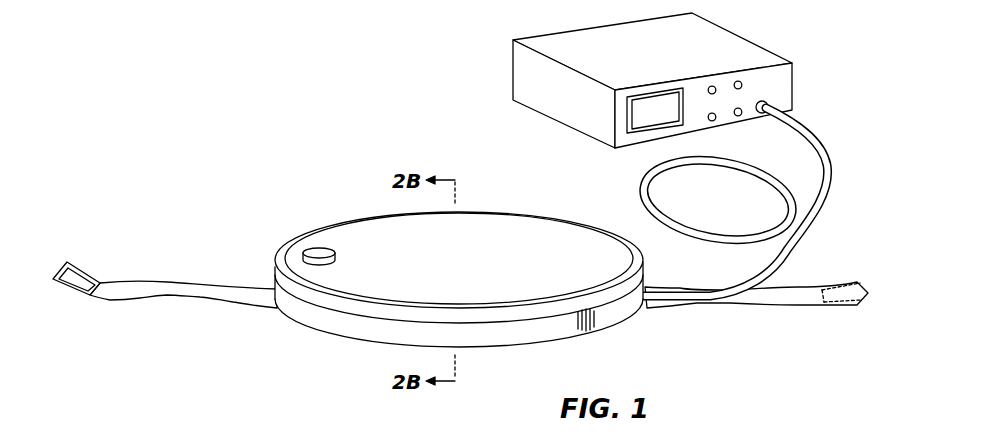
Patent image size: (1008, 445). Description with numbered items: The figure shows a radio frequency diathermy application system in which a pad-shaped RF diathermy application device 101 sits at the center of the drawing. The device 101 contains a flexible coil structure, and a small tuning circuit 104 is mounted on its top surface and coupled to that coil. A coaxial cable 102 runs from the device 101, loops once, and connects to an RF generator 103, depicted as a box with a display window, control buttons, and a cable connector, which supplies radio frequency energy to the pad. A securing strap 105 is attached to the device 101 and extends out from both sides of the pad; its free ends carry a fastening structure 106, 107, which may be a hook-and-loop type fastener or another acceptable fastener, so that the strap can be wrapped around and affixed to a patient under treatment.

The RF diathermy application device 101 is at (357, 337).
The coaxial cable 102 is at (830, 162).
The RF generator 103 is at (717, 38).
The tuning circuit 104 is at (315, 247).
The securing strap 105 is at (193, 281).
The fastening structure 106 is at (88, 270).
The fastening structure 107 is at (827, 287).